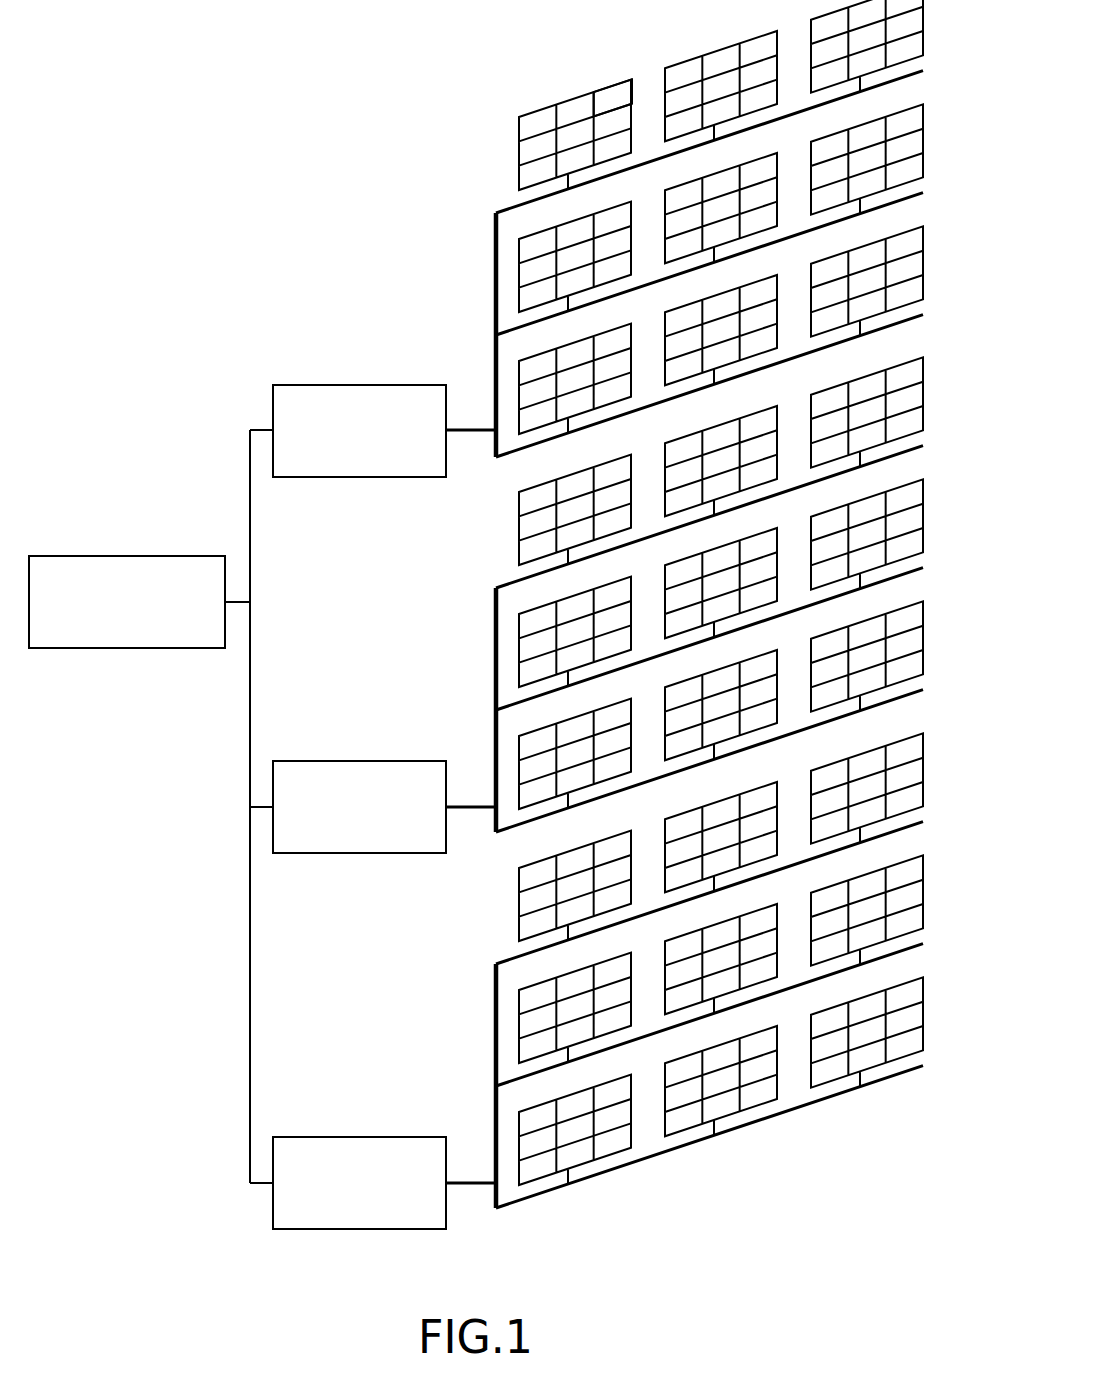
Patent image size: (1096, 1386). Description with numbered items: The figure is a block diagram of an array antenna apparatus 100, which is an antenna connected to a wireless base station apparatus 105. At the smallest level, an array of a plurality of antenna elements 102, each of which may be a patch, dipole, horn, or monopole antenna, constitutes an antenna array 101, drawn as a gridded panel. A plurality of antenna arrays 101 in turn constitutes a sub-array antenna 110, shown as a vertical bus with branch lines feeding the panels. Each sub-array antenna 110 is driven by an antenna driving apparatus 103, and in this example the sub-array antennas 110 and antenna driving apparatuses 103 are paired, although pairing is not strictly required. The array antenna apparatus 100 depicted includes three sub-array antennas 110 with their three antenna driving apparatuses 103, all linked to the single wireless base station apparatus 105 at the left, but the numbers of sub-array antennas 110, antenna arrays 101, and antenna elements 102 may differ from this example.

The array antenna apparatus 100 is at (476, 639).
The antenna array 101 is at (530, 111).
The antenna element 102 is at (613, 100).
The antenna driving apparatus 103 is at (382, 384).
The wireless base station apparatus 105 is at (162, 556).
The sub-array antenna 110 is at (672, 228).